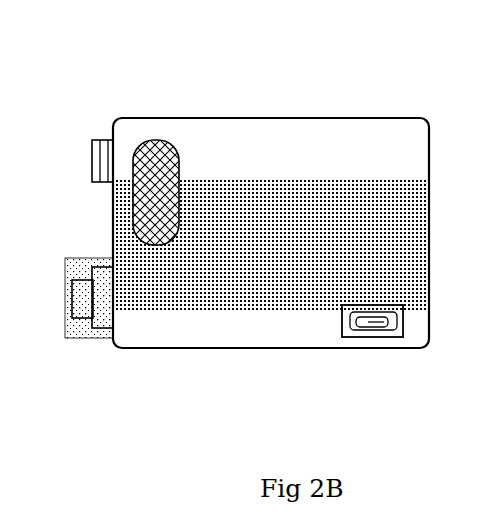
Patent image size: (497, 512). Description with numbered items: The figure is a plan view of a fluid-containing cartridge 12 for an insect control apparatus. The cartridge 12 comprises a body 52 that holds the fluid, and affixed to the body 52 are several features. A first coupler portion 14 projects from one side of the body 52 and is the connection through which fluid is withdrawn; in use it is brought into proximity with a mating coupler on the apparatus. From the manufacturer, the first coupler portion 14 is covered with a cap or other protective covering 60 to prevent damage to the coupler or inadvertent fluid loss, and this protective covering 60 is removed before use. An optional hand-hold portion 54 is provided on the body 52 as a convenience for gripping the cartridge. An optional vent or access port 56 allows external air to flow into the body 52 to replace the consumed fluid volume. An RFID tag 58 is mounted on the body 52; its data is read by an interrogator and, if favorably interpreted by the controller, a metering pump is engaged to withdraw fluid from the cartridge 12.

The fluid-containing cartridge 12 is at (232, 112).
The first coupler portion 14 is at (78, 323).
The body 52 is at (352, 118).
The hand-hold portion 54 is at (110, 205).
The vent or access port 56 is at (89, 155).
The RFID tag 58 is at (408, 323).
The protective covering 60 is at (65, 256).